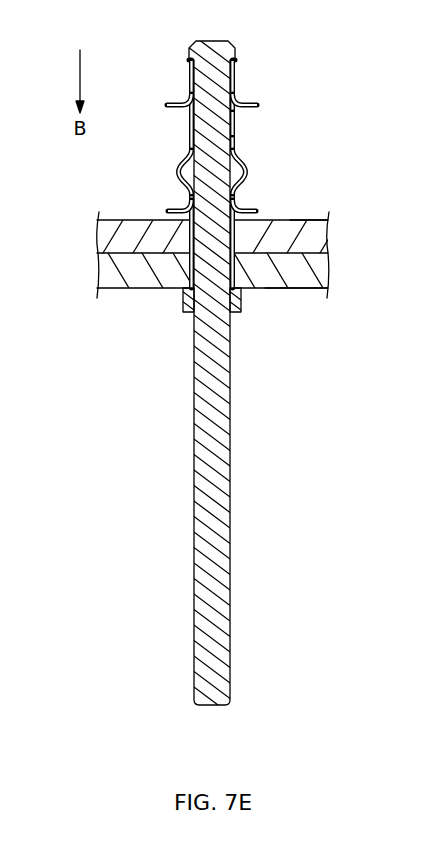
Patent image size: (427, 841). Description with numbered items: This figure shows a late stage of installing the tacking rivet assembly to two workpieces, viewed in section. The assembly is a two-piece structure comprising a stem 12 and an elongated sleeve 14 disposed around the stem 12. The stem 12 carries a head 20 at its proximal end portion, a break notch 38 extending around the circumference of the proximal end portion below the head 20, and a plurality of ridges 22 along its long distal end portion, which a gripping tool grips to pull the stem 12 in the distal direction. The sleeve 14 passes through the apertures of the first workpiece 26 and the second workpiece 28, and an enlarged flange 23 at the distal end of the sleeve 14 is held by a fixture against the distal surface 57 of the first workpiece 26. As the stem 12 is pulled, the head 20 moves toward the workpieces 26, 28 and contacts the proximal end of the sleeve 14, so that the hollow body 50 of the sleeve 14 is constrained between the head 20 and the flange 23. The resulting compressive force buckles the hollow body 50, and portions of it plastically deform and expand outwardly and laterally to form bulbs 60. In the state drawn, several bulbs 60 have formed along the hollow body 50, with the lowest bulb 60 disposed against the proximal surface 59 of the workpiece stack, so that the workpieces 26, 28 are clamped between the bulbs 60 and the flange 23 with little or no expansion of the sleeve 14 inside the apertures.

The stem 12 is at (203, 147).
The elongated sleeve 14 is at (163, 105).
The head 20 is at (218, 50).
The ridges 22 is at (193, 450).
The flange 23 is at (183, 297).
The first workpiece 26 is at (100, 276).
The second workpiece 28 is at (100, 240).
The break notch 38 is at (236, 128).
The hollow body 50 is at (238, 150).
The distal surface 57 is at (280, 290).
The proximal surface 59 is at (318, 214).
The bulb 60 is at (258, 103).